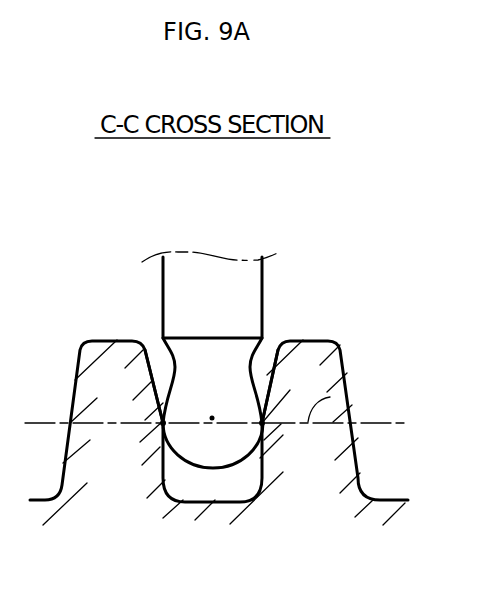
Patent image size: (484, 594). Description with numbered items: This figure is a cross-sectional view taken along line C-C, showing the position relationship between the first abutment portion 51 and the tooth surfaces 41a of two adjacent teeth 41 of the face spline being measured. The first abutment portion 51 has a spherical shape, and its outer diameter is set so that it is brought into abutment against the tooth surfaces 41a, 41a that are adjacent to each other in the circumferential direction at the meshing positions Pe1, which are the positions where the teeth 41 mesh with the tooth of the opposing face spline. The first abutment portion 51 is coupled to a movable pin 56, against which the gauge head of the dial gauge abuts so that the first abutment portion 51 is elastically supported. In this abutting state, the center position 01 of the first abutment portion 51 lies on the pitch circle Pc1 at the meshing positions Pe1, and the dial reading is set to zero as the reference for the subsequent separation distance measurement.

The teeth 41 is at (97, 350).
The tooth surfaces 41a is at (161, 386).
The movable pin 56 is at (248, 277).
The first abutment portion 51 is at (197, 448).
The center position 01 is at (212, 417).
The pitch circle / reference line Pc1 is at (336, 397).
The meshing positions Pe1 is at (163, 424).